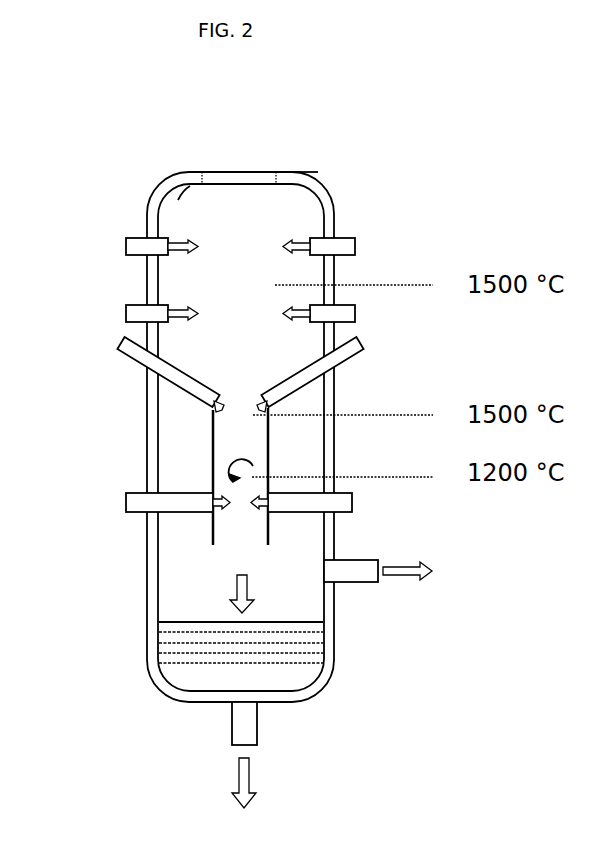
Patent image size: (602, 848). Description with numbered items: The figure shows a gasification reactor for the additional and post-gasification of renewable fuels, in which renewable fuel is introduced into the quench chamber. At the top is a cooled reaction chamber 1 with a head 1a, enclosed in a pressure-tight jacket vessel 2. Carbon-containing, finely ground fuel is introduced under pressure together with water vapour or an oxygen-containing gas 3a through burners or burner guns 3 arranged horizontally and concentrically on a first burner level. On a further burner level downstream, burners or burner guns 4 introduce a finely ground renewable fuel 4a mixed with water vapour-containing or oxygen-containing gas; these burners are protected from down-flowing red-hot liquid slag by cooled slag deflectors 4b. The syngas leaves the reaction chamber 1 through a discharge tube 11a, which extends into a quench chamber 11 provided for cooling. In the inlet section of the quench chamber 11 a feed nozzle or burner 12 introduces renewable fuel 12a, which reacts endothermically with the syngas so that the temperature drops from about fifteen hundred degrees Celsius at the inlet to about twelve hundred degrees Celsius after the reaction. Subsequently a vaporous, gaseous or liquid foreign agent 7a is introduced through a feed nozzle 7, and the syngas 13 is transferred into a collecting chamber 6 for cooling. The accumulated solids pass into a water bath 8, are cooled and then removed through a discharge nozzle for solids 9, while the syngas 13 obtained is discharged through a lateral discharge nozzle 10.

The reaction chamber 1 is at (188, 195).
The head 1a is at (238, 171).
The pressure-tight jacket vessel 2 is at (322, 171).
The burners or burner guns 3 is at (137, 234).
The water vapour or oxygen-containing gas 3a is at (188, 232).
The burners or burner guns 4 is at (138, 299).
The finely ground renewable fuel 4a is at (199, 318).
The cooled slag deflectors 4b is at (183, 293).
The feed nozzle or burner for renewable fuel 12 is at (114, 341).
The renewable fuel 12a is at (253, 396).
The quench chamber 11 is at (240, 450).
The discharge tube 11a is at (278, 472).
The feed nozzle 7 is at (116, 505).
The vaporous, gaseous or liquid foreign agent 7a is at (230, 518).
The collecting chamber 6 is at (286, 487).
The water bath 8 is at (215, 608).
The syngas 13 is at (256, 590).
The lateral discharge nozzle 10 is at (358, 593).
The discharge nozzle for solids 9 is at (268, 726).